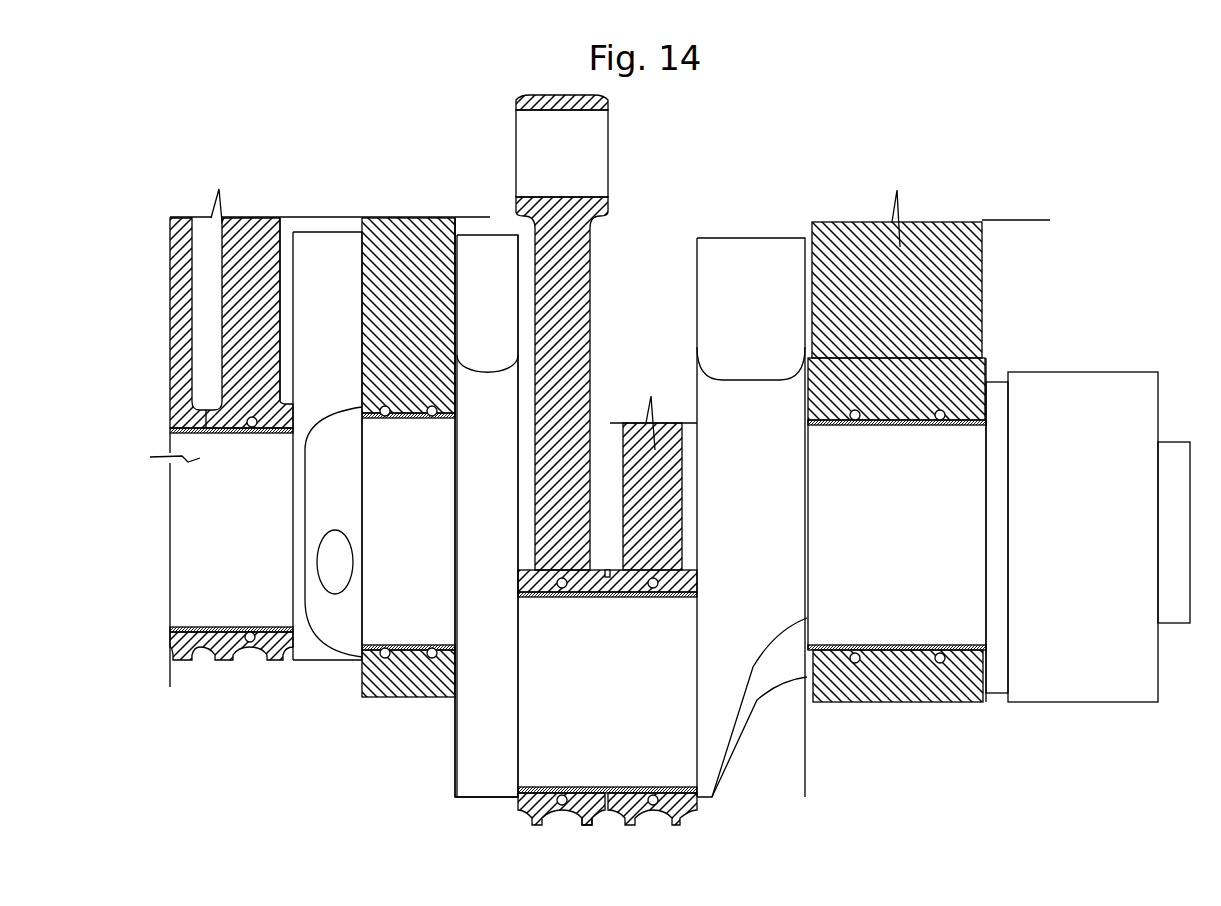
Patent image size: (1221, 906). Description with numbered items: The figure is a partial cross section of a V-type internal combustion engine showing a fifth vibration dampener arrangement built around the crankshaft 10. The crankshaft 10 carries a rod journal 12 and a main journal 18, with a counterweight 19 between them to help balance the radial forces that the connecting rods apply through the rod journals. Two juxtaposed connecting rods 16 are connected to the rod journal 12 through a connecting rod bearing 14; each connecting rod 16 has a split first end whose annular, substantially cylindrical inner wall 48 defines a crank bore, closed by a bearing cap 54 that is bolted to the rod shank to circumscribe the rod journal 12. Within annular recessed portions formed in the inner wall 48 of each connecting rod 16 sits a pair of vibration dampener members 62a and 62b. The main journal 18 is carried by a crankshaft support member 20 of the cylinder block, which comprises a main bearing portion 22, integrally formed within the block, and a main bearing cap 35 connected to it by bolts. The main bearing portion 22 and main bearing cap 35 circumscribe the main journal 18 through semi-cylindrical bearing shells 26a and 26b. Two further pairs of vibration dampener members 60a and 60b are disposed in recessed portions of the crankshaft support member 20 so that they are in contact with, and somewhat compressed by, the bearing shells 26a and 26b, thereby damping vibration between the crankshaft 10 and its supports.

The crankshaft 10 is at (1164, 400).
The rod journal 12 is at (222, 537).
The bearing 14 is at (207, 625).
The connecting rod 16 is at (590, 270).
The main journal 18 is at (402, 537).
The counterweight 19 is at (750, 237).
The crankshaft support member 20 is at (354, 314).
The main bearing portion 22 is at (410, 232).
The semi-cylindrical bearing shell 26a is at (432, 420).
The semi-cylindrical bearing shell 26b is at (425, 645).
The main bearing cap 35 is at (400, 697).
The inner wall 48 is at (650, 590).
The bearing cap 54 is at (597, 815).
The vibration dampener member 60a is at (387, 416).
The vibration dampener member 60b is at (385, 648).
The vibration dampener member 62a is at (250, 428).
The vibration dampener member 62b is at (252, 642).